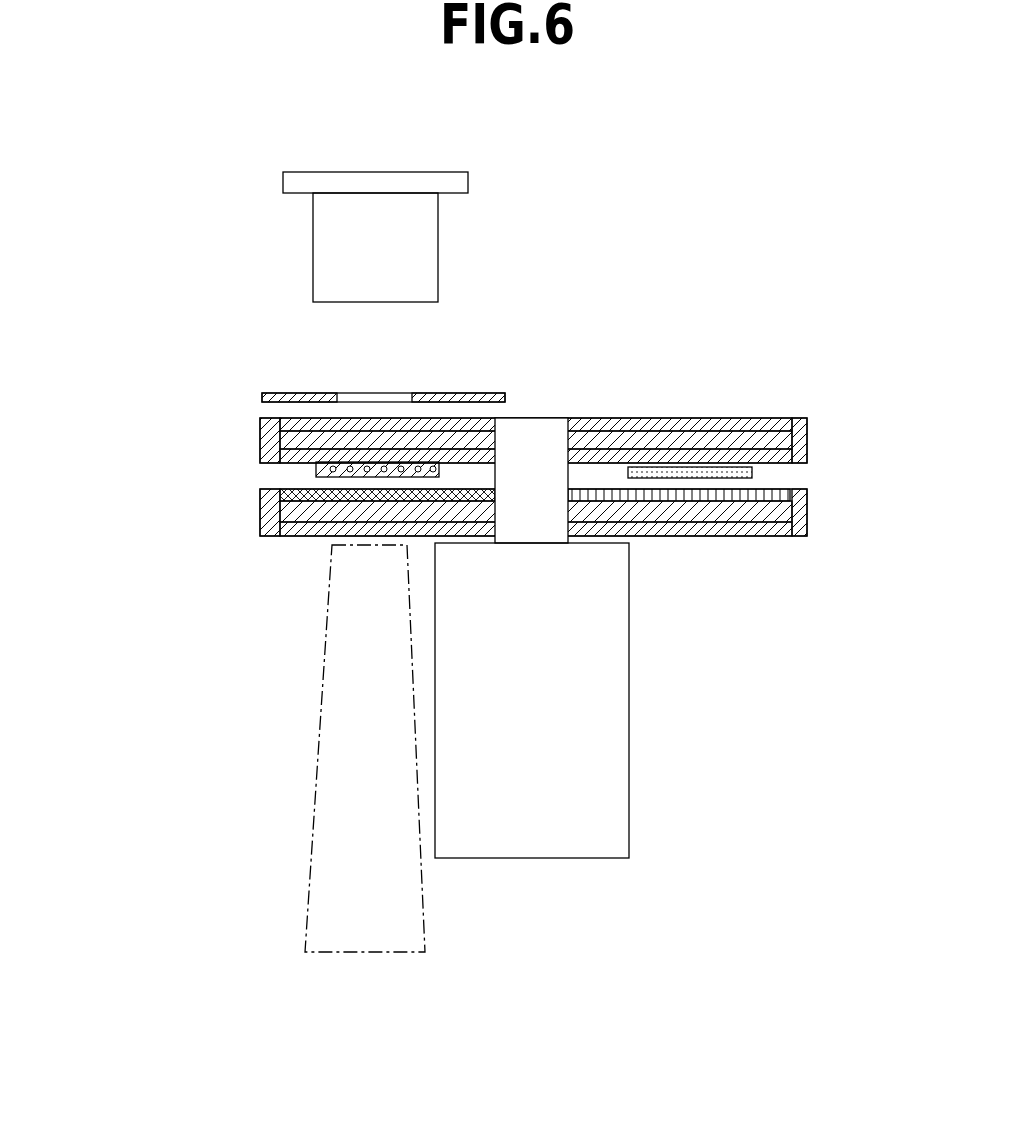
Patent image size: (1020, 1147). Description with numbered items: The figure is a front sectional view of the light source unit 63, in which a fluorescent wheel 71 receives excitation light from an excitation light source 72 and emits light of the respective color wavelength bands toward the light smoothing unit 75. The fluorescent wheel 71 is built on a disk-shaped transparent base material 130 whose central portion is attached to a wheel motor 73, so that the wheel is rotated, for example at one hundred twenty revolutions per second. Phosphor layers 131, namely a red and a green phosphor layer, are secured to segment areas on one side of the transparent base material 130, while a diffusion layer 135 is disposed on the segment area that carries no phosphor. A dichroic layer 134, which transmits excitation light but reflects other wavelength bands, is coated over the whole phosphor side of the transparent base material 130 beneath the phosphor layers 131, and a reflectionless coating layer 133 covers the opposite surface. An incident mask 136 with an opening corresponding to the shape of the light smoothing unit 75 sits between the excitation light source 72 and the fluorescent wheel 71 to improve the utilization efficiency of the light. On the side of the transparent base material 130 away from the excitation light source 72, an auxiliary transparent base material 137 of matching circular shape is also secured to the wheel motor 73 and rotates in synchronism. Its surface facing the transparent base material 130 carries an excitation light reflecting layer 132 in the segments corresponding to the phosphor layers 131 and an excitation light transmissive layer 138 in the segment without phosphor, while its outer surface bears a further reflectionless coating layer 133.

The light source unit 63 is at (818, 290).
The fluorescent wheel 71 is at (748, 592).
The excitation light source 72 is at (348, 243).
The wheel motor 73 is at (608, 662).
The light smoothing unit 75 is at (363, 733).
The transparent base material 130 is at (290, 435).
The phosphor layers 131 is at (313, 468).
The excitation light reflecting layer 132 is at (305, 495).
The reflectionless coating layer 133 is at (298, 420).
The dichroic layer 134 is at (283, 445).
The diffusion layer 135 is at (753, 474).
The incident mask 136 is at (292, 392).
The auxiliary transparent base material 137 is at (780, 517).
The excitation light transmissive layer 138 is at (758, 497).